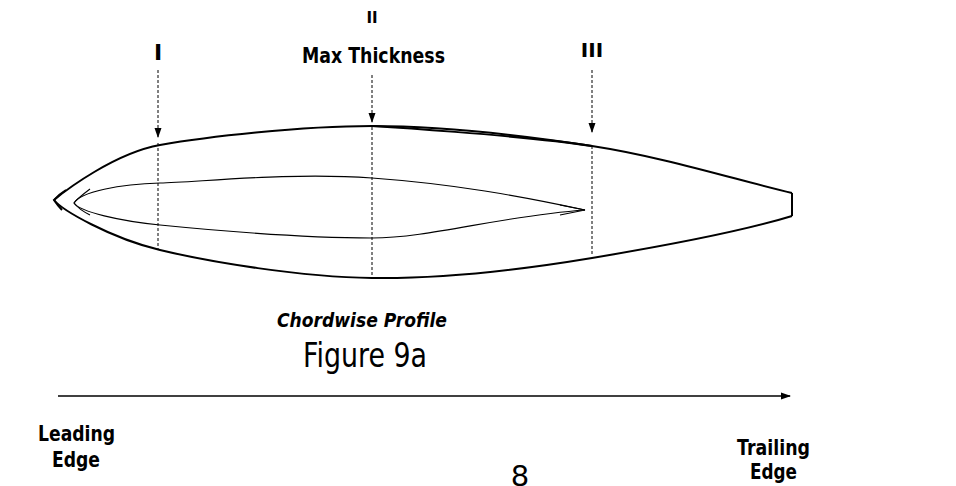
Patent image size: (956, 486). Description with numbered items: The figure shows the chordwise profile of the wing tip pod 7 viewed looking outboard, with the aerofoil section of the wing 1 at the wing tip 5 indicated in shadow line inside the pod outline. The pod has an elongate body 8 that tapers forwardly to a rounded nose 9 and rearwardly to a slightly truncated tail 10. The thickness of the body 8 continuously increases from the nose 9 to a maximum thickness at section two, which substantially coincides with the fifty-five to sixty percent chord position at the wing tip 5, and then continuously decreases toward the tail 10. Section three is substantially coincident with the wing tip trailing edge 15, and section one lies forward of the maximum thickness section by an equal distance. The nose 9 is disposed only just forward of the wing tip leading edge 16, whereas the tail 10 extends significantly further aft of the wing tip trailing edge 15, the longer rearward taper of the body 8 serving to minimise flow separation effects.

The wing 1 is at (200, 229).
The wing tip 5 is at (203, 178).
The wing tip pod 7 is at (650, 168).
The elongate body 8 is at (478, 150).
The nose 9 is at (76, 170).
The tail 10 is at (802, 186).
The wing tip trailing edge 15 is at (582, 230).
The wing tip leading edge 16 is at (76, 208).